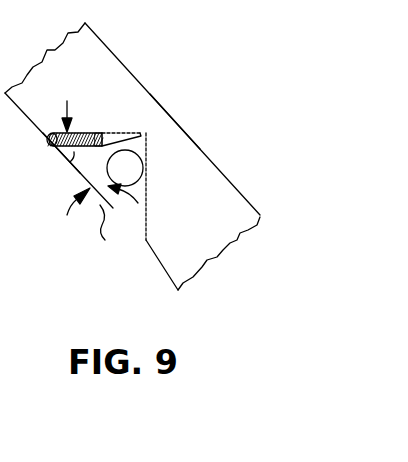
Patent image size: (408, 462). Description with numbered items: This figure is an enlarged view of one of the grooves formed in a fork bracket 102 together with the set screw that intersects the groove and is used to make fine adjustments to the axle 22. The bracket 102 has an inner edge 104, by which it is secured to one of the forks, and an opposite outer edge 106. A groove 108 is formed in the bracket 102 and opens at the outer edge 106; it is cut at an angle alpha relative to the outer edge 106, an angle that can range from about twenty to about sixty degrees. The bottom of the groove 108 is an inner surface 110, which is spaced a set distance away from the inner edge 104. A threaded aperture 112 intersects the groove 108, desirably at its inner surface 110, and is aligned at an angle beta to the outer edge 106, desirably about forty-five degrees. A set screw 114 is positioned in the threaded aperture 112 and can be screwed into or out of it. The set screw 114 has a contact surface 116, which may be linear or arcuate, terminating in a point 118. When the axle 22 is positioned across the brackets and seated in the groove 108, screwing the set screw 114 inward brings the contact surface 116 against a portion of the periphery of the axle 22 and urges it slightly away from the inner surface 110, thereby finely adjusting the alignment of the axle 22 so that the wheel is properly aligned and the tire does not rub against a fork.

The bracket 102 is at (148, 91).
The inner edge 104 is at (208, 157).
The outer edge 106 is at (60, 157).
The groove 108 is at (92, 218).
The inner surface 110 is at (174, 120).
The threaded aperture 112 is at (115, 133).
The set screw 114 is at (87, 132).
The contact surface 116 is at (103, 132).
The point 118 is at (108, 146).
The axle 22 is at (117, 176).